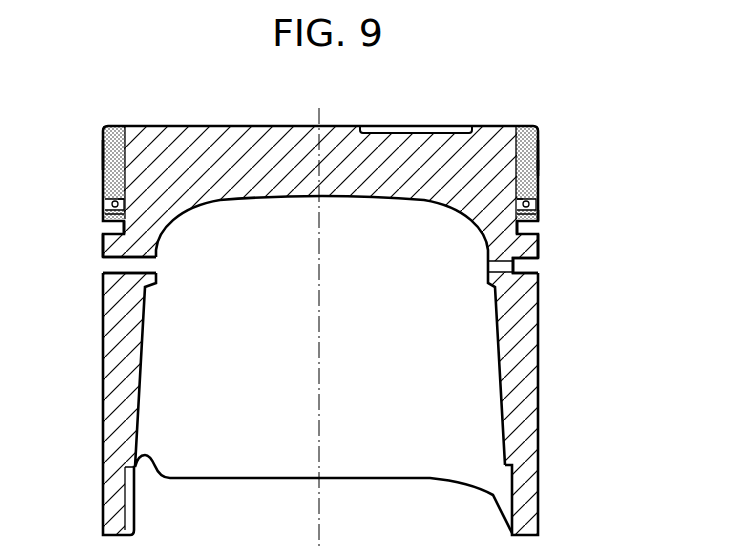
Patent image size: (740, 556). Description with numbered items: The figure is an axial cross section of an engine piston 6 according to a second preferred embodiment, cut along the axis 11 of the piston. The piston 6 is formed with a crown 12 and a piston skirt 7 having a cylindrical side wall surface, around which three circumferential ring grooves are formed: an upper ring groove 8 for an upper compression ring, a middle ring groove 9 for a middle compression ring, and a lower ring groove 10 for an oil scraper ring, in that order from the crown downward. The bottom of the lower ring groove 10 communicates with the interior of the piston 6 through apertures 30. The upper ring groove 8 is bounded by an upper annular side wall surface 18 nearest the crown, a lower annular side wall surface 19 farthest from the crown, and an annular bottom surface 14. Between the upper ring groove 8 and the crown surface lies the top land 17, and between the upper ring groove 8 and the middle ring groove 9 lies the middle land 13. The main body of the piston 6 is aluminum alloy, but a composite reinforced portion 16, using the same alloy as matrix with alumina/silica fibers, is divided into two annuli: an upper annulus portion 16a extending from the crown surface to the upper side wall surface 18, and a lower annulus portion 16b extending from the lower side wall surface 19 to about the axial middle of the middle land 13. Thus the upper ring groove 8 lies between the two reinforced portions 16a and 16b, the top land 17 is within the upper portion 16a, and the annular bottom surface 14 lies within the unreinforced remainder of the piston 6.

The engine piston 6 is at (360, 126).
The piston skirt 7 is at (103, 386).
The upper ring groove 8 is at (106, 207).
The middle ring groove 9 is at (105, 235).
The lower ring groove 10 is at (110, 268).
The axis of the piston 11 is at (317, 118).
The crown 12 is at (200, 125).
The middle land surface 13 is at (103, 228).
The annular bottom surface of the upper ring groove 14 is at (122, 200).
The composite reinforced portion 16 is at (104, 133).
The upper annulus portion 16a is at (540, 172).
The lower annulus portion 16b is at (538, 216).
The upper land surface 17 is at (102, 158).
The upper annular side wall surface 18 is at (112, 202).
The lower annular side wall surface 19 is at (125, 213).
The apertures 30 is at (486, 266).